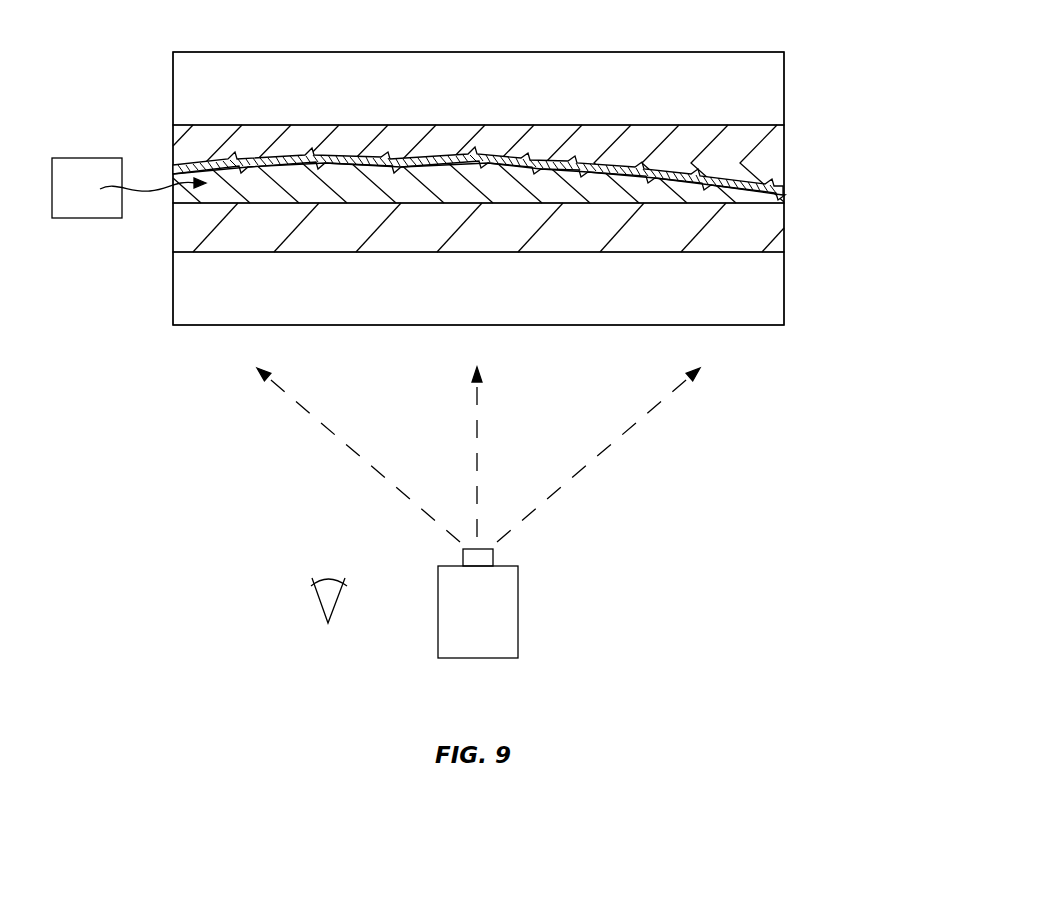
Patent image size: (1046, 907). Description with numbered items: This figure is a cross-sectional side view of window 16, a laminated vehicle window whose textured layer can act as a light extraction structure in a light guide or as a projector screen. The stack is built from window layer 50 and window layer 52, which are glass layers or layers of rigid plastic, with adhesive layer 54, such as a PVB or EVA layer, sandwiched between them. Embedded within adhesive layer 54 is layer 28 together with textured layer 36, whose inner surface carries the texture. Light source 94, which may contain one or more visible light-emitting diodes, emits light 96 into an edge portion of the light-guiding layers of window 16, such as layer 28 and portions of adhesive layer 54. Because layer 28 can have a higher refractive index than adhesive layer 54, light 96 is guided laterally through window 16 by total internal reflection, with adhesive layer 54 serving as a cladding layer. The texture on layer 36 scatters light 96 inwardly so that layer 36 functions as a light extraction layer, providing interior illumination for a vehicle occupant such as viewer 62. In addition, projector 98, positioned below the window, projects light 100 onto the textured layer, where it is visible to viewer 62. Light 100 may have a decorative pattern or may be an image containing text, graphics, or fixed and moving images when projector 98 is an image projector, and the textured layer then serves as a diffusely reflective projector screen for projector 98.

The window 16 is at (821, 49).
The layer 28 is at (781, 197).
The layer 36 is at (776, 182).
The window layer 50 is at (773, 88).
The window layer 52 is at (773, 285).
The adhesive layer 54 is at (773, 145).
The viewer 62 is at (313, 597).
The light source 94 is at (83, 220).
The light 96 is at (148, 194).
The projector 98 is at (519, 607).
The light 100 is at (349, 441).